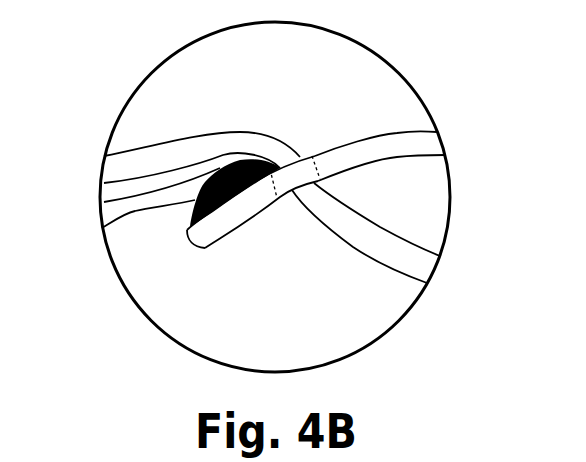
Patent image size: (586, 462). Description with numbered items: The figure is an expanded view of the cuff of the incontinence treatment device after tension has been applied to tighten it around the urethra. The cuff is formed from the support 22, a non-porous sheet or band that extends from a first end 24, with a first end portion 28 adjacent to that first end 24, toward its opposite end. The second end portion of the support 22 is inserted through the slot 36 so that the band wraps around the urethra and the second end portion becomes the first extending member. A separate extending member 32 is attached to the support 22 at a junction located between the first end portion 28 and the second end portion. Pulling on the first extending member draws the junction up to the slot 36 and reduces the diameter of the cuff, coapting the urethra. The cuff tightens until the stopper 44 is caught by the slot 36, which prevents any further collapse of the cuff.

The support 22 is at (207, 144).
The first end portion 28 is at (368, 151).
The first end 24 is at (207, 254).
The extending member 32 is at (135, 211).
The slot 36 is at (277, 198).
The stopper 44 is at (192, 228).